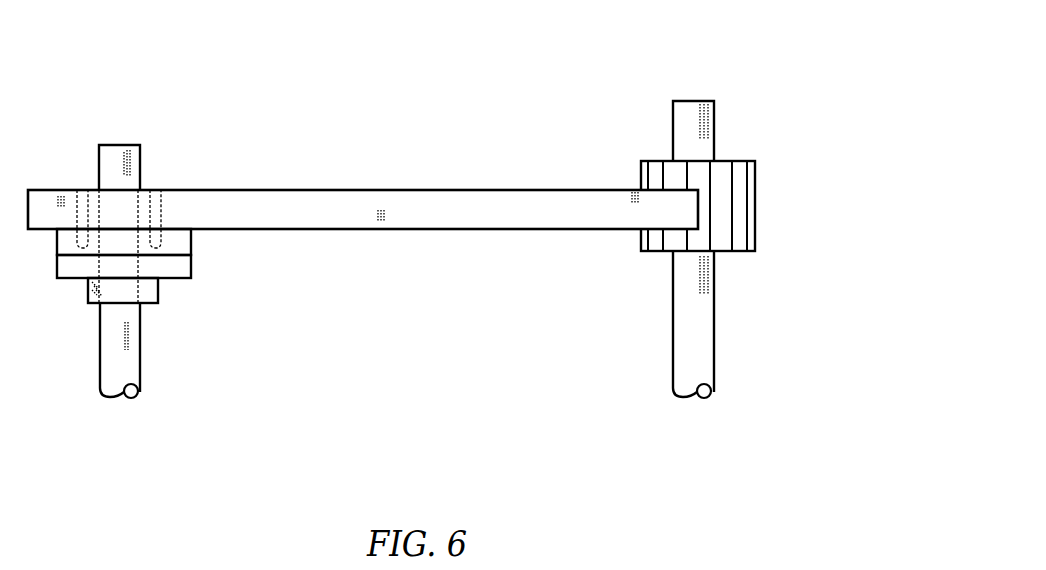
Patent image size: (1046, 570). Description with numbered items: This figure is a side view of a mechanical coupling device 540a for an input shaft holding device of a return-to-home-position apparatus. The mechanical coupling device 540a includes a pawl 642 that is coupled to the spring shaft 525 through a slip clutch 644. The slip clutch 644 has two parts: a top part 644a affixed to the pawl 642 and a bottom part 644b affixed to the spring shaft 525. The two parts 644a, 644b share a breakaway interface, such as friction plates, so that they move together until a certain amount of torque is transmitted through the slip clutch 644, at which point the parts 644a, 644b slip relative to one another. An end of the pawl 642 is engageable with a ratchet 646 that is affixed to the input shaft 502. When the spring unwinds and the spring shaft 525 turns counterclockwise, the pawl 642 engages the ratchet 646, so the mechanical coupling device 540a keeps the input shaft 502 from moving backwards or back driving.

The input shaft 502 is at (692, 106).
The spring shaft 525 is at (115, 145).
The mechanical coupling device 540a is at (378, 357).
The pawl 642 is at (262, 189).
The slip clutch 644 is at (210, 325).
The top part of the slip clutch 644a is at (191, 235).
The bottom part of the slip clutch 644b is at (191, 270).
The ratchet 646 is at (650, 161).